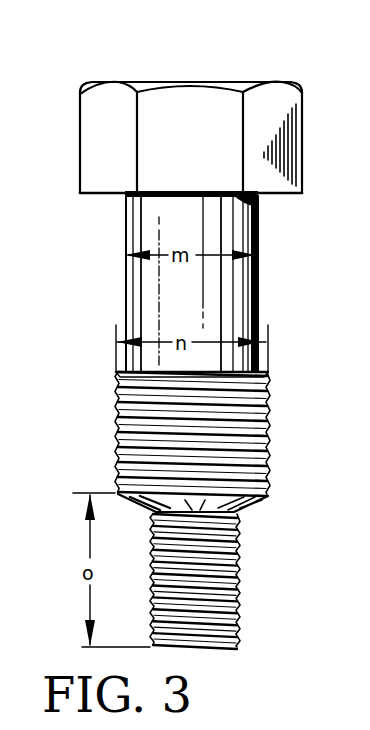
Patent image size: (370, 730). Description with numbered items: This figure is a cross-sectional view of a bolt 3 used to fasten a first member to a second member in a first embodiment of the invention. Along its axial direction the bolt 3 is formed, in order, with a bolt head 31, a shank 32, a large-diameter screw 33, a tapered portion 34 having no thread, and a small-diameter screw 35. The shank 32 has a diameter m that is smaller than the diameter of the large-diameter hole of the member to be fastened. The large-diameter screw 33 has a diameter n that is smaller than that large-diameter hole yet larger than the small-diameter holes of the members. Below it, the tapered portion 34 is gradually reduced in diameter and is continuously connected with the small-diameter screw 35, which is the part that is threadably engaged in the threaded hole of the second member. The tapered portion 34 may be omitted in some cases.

The bolt 3 is at (132, 63).
The bolt head 31 is at (239, 83).
The shank 32 is at (228, 303).
The large-diameter screw 33 is at (268, 433).
The tapered portion 34 is at (247, 510).
The small-diameter screw 35 is at (205, 641).